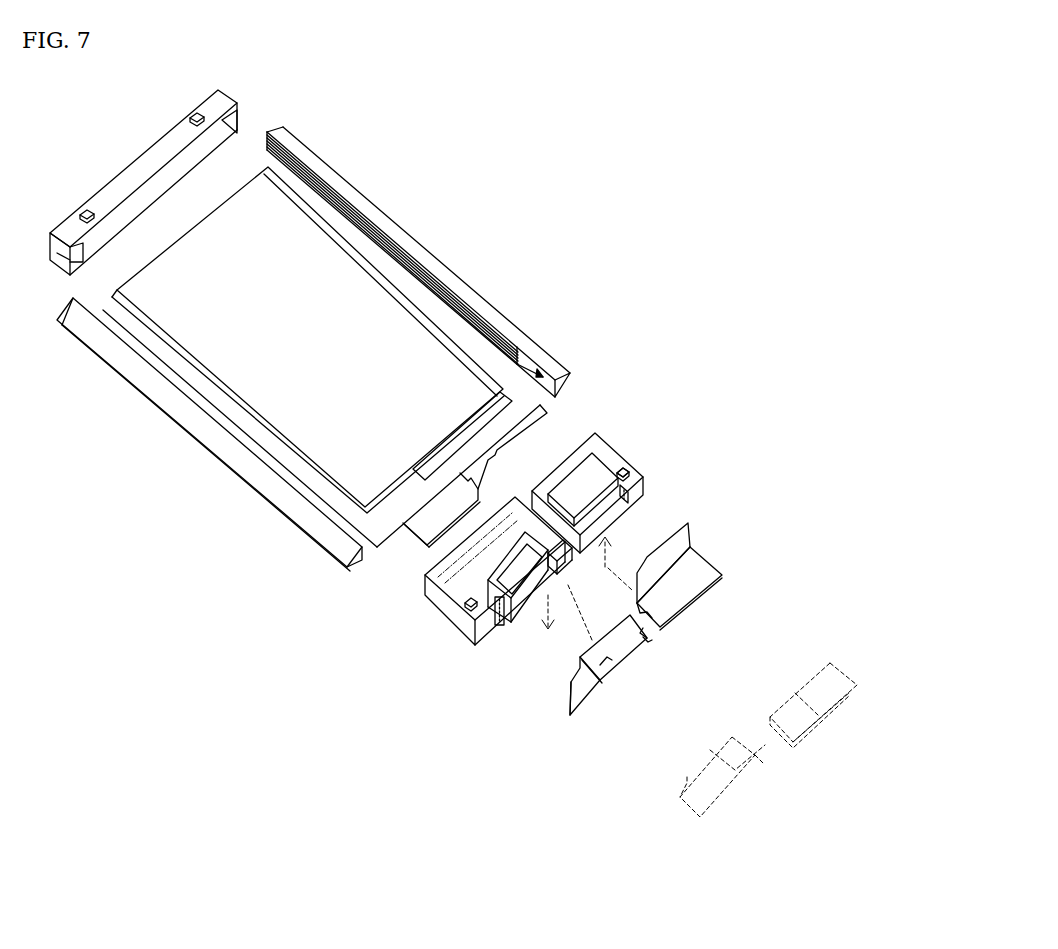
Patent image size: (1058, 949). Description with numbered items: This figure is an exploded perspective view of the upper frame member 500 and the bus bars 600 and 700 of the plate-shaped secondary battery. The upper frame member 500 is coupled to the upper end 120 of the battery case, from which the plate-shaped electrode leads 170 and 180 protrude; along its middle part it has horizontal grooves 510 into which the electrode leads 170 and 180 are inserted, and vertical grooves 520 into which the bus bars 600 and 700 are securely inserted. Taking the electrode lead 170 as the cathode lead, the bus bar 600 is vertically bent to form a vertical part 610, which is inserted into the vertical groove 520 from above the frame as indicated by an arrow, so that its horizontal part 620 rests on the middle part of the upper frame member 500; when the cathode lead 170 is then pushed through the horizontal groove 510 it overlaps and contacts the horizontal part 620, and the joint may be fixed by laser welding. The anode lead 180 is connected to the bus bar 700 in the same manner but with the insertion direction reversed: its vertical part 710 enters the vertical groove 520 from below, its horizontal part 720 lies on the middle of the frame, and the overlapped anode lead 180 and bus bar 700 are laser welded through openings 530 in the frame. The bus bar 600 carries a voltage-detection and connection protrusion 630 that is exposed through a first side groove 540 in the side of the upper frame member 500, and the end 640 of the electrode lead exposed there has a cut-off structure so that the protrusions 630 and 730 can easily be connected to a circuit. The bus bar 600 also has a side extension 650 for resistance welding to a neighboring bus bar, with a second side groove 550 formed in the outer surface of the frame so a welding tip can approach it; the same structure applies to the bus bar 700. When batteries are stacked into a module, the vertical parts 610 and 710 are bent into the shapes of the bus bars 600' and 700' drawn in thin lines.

The upper end 120 is at (570, 402).
The electrode lead 170 is at (437, 510).
The electrode lead 180 is at (418, 303).
The upper frame member 500 is at (396, 618).
The horizontal groove 510 is at (430, 612).
The vertical groove 520 is at (588, 473).
The opening 530 is at (640, 490).
The first side groove 540 is at (547, 582).
The second side groove 550 is at (500, 630).
The bus bar 600 is at (627, 710).
The vertical part 610 is at (595, 686).
The horizontal part 620 is at (621, 664).
The voltage-detection and connection protrusion 630 is at (612, 660).
The end of the electrode lead 640 is at (650, 638).
The side extension 650 is at (568, 700).
The bus bar 700 is at (749, 569).
The vertical part 710 is at (692, 545).
The horizontal part 720 is at (715, 584).
The voltage-detection and connection protrusion 730 is at (665, 624).
The bus bar 600' is at (764, 777).
The bus bar 700' is at (846, 715).